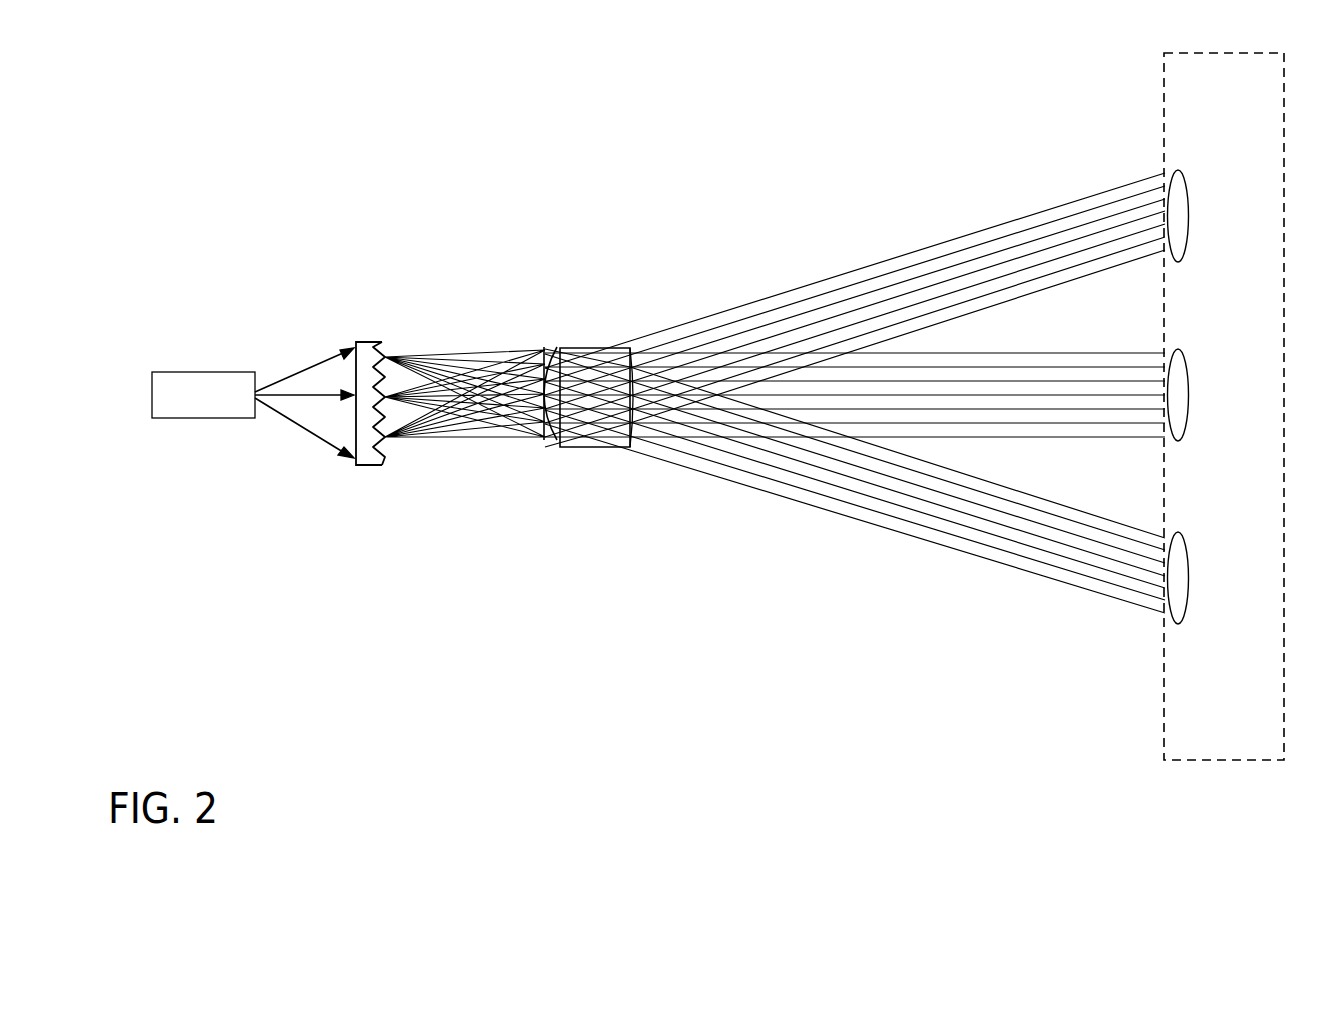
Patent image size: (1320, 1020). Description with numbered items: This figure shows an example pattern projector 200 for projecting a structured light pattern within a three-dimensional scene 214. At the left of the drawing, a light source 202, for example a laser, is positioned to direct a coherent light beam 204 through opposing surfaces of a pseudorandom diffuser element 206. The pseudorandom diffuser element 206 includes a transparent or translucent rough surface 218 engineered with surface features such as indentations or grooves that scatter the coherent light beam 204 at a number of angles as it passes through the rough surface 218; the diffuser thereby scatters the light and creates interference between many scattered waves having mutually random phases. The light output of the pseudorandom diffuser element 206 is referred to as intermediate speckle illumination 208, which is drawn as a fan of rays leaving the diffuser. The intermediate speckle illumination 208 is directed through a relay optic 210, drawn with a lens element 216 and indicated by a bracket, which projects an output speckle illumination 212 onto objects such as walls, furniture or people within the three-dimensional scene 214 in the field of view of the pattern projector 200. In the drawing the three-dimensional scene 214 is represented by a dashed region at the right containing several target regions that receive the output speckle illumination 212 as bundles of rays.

The pattern projector 200 is at (220, 200).
The light source 202 is at (228, 372).
The coherent light beam 204 is at (301, 366).
The pseudorandom diffuser element 206 is at (369, 343).
The intermediate speckle illumination 208 is at (460, 354).
The relay optic 210 is at (637, 347).
The output speckle illumination 212 is at (996, 256).
The three-dimensional scene 214 is at (1163, 113).
The lens 216 is at (541, 371).
The rough surface 218 is at (385, 452).